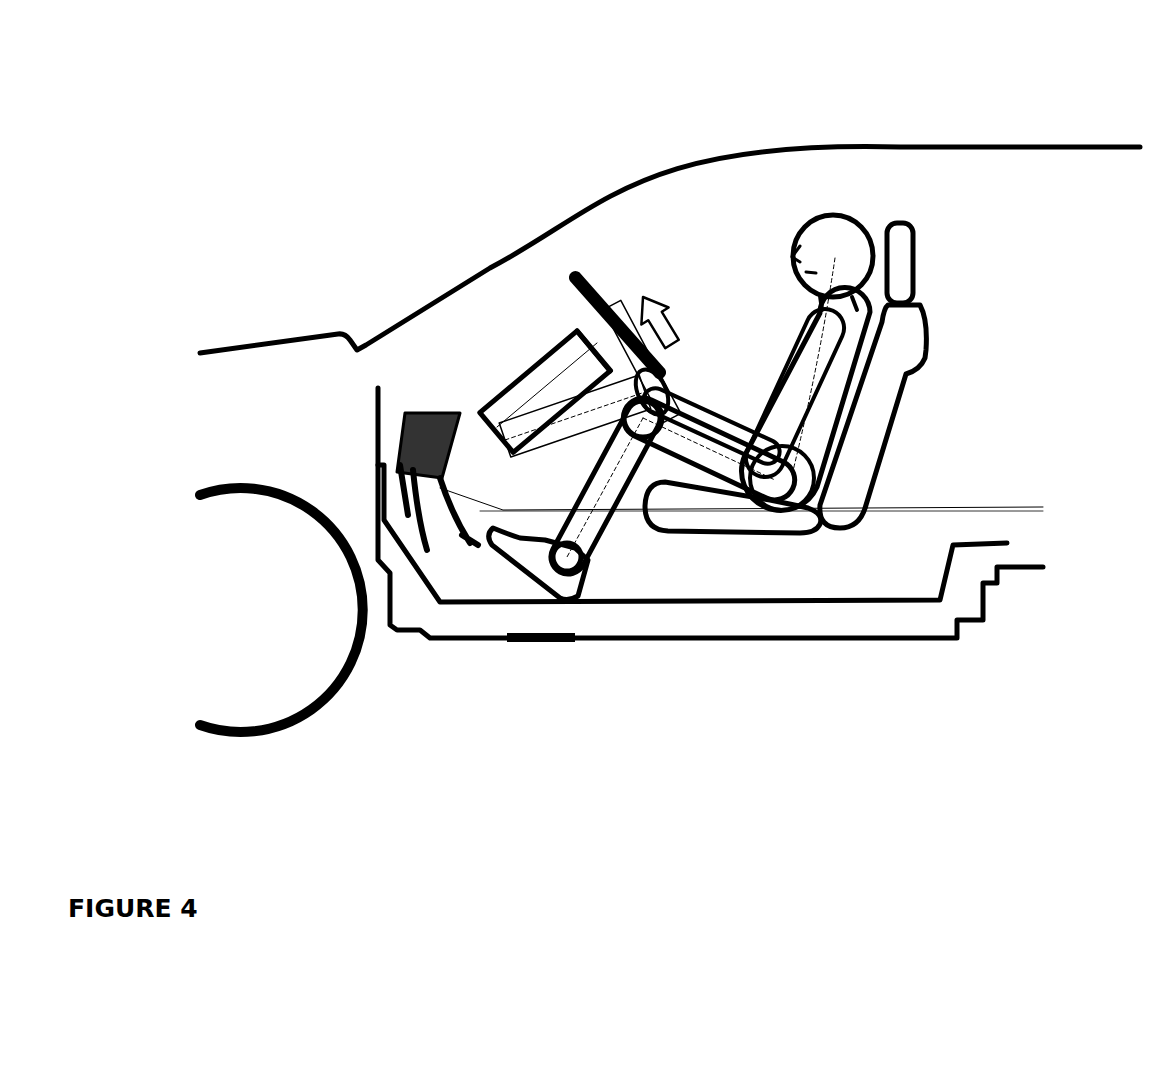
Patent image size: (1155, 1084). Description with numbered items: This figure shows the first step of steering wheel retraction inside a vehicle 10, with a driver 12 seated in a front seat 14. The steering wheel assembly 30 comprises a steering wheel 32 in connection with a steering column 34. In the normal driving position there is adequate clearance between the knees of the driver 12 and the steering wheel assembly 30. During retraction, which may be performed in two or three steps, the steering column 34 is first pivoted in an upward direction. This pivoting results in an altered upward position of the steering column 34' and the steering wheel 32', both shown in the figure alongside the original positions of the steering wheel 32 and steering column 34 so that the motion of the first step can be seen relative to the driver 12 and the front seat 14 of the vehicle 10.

The vehicle 10 is at (444, 181).
The driver 12 is at (820, 212).
The front seat 14 is at (903, 220).
The steering wheel assembly 30 is at (526, 333).
The steering wheel 32 is at (677, 361).
The steering wheel in altered upward position 32' is at (617, 305).
The steering column 34 is at (575, 434).
The steering column in altered upward position 34' is at (524, 392).